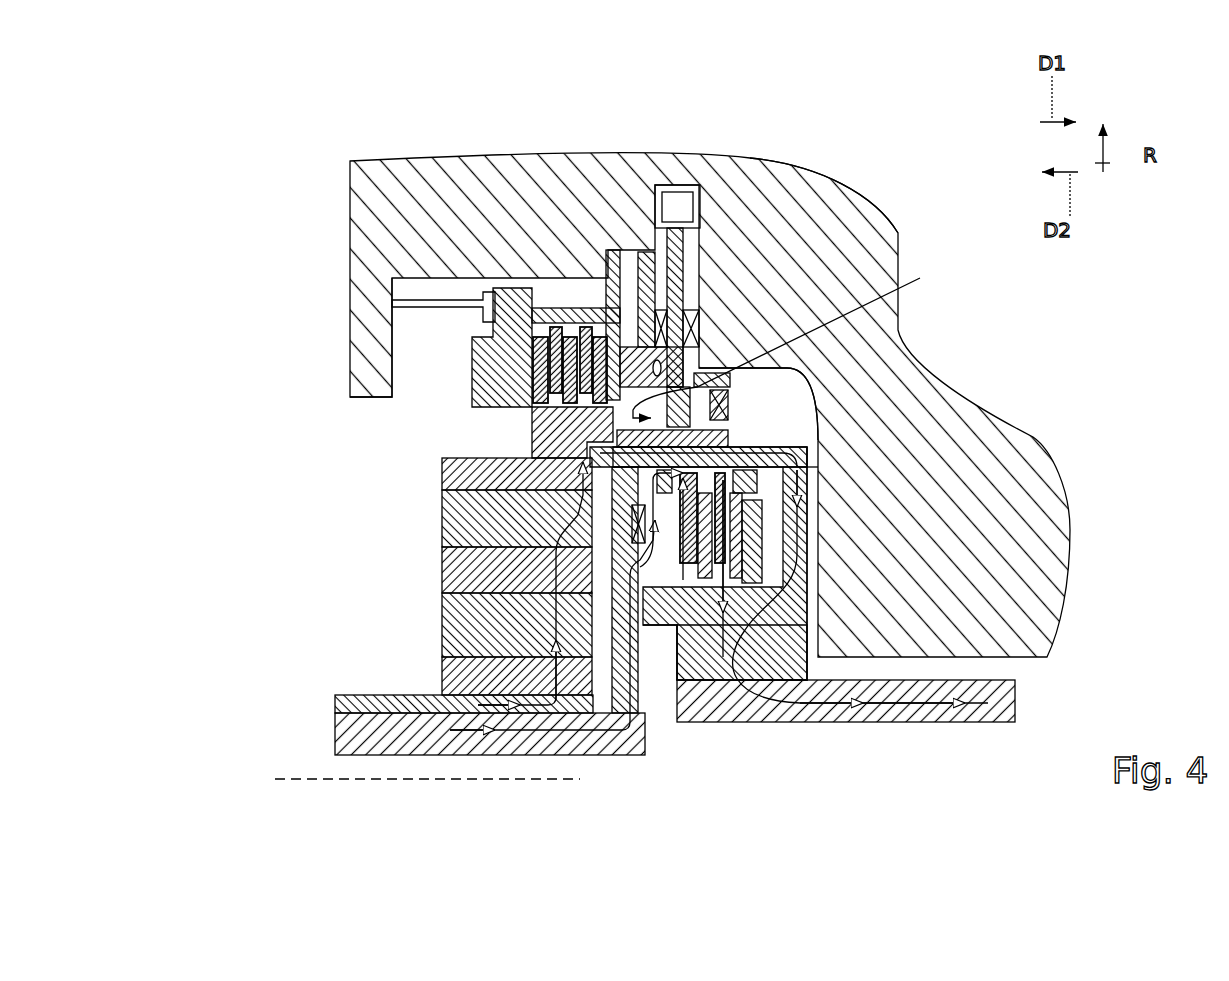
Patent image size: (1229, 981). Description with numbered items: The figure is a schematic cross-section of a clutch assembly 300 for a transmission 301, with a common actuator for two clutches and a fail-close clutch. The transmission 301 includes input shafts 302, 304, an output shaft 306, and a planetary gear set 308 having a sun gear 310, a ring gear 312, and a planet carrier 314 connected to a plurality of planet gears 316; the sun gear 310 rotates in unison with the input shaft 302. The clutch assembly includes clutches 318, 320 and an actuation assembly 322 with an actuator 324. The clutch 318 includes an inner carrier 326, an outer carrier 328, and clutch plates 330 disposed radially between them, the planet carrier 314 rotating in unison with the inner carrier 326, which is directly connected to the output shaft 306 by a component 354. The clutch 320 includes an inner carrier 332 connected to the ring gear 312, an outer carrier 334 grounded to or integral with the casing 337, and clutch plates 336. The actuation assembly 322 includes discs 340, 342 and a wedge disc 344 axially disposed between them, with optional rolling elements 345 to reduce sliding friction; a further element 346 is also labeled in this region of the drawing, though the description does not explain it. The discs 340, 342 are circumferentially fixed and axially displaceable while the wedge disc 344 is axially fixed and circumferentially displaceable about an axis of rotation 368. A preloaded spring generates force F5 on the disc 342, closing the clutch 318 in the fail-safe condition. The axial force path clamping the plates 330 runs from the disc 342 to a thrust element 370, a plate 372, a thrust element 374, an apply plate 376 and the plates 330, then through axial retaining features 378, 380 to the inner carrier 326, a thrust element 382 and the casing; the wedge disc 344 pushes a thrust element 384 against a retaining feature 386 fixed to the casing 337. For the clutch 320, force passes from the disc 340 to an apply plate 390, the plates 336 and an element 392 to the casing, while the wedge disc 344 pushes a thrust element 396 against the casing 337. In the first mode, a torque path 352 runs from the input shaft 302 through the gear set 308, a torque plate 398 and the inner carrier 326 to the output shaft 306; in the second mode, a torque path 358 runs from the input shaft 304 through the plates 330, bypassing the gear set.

The clutch assembly 300 is at (686, 156).
The transmission 301 is at (836, 171).
The input shaft 302 is at (340, 705).
The input shaft 304 is at (340, 735).
The output shaft 306 is at (940, 735).
The planetary gear set 308 is at (311, 561).
The sun gear 310 is at (450, 675).
The ring gear 312 is at (470, 465).
The planet carrier 314 is at (500, 520).
The planet gears 316 is at (450, 615).
The clutch 318 is at (698, 644).
The clutch 320 is at (551, 290).
The actuation assembly 322 is at (755, 286).
The actuator 324 is at (700, 200).
The inner carrier 326 is at (812, 625).
The outer carrier 328 is at (810, 447).
The clutch plates 330 is at (661, 516).
The inner carrier 332 is at (540, 430).
The outer carrier 334 is at (545, 305).
The clutch plates 336 is at (517, 370).
The casing 337 is at (400, 245).
The disc 340 is at (645, 254).
The disc 342 is at (730, 395).
The wedge disc 344 is at (660, 352).
The rolling elements 345 is at (700, 360).
The sealing element 346 is at (700, 405).
The torque path 352 is at (560, 450).
The component 354 is at (780, 725).
The torque path 358 is at (565, 755).
The axis of rotation 368 is at (497, 785).
The thrust element 370 is at (720, 450).
The plate 372 is at (760, 440).
The thrust element 374 is at (470, 565).
The apply plate 376 is at (662, 628).
The axial retaining feature 378 is at (765, 510).
The axial retaining feature 380 is at (765, 545).
The thrust element 382 is at (800, 640).
The thrust element 384 is at (672, 186).
The retaining feature 386 is at (663, 250).
The apply plate 390 is at (566, 330).
The element 392 is at (400, 300).
The thrust element 396 is at (832, 172).
The torque plate 398 is at (812, 462).
The force F5 is at (794, 341).